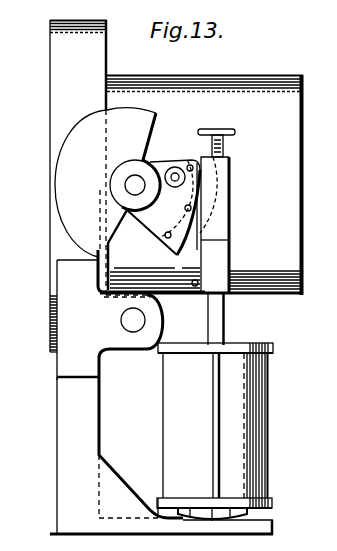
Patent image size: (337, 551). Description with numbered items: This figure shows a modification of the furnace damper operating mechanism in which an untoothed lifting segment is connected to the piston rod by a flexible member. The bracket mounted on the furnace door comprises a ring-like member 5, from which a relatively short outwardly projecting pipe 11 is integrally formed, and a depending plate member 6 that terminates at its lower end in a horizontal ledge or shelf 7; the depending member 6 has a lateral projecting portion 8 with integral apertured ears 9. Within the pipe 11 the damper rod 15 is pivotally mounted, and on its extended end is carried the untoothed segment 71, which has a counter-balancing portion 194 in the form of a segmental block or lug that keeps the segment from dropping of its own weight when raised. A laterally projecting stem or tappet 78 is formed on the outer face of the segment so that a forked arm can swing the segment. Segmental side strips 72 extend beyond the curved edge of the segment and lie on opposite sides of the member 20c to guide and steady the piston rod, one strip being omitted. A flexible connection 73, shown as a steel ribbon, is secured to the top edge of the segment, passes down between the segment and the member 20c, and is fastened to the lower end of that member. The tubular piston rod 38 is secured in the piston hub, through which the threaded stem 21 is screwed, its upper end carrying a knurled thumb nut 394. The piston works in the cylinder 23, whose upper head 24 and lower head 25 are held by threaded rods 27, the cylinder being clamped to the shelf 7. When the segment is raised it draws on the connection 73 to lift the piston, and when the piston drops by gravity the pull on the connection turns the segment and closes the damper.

The ring-like member 5 is at (55, 52).
The outwardly projecting pipe 11 is at (238, 88).
The counter-balancing portion 194 is at (97, 126).
The rod 15 is at (133, 185).
The stem or tappet 78 is at (171, 176).
The untoothed segment 71 is at (153, 220).
The flexible connection 73 is at (205, 259).
The knurled thumb nut 394 is at (222, 121).
The stem 21 is at (224, 143).
The member 20c is at (216, 195).
The segmental side strips 72 is at (215, 240).
The tubular piston rod 38 is at (225, 318).
The upper head 24 is at (273, 348).
The cylinder 23 is at (255, 410).
The threaded rods 27 is at (212, 428).
The lower head 25 is at (270, 501).
The horizontal ledge or shelf 7 is at (275, 528).
The lateral projecting portion 8 is at (62, 366).
The depending plate member 6 is at (57, 426).
The apertured ears 9 is at (129, 340).